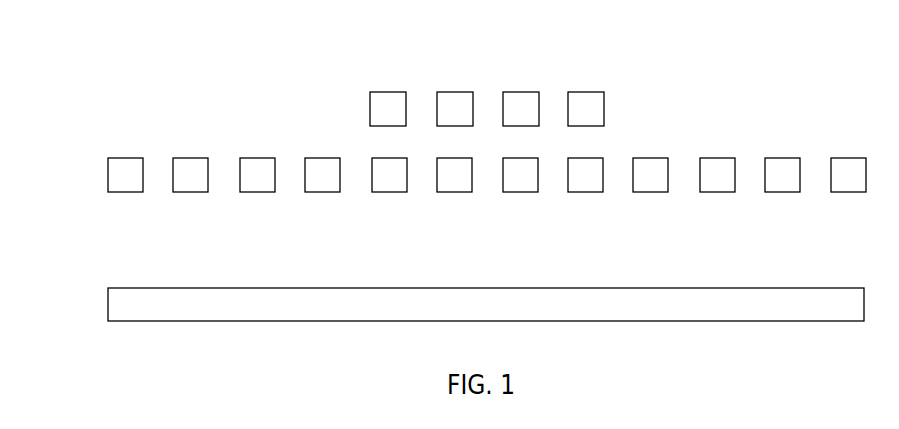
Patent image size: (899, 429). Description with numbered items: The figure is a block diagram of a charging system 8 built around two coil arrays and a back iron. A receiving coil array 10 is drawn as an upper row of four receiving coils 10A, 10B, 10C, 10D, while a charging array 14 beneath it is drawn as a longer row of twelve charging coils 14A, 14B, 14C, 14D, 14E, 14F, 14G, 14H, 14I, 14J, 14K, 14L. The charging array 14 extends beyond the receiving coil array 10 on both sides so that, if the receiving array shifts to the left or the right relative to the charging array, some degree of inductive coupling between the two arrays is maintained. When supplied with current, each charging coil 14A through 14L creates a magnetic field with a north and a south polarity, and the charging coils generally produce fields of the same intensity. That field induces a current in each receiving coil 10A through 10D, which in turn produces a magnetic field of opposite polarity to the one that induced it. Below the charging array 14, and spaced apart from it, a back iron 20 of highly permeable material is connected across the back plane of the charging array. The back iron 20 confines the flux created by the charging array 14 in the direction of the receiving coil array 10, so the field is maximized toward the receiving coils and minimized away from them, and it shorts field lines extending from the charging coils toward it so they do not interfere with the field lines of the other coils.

The charging system 8 is at (172, 84).
The receiving coil array 10 is at (316, 110).
The receiving coil 10A is at (397, 92).
The receiving coil 10B is at (463, 92).
The receiving coil 10C is at (529, 92).
The receiving coil 10D is at (594, 92).
The charging array 14 is at (88, 176).
The charging coil 14A is at (125, 196).
The charging coil 14B is at (183, 193).
The charging coil 14C is at (250, 193).
The charging coil 14D is at (315, 193).
The charging coil 14E is at (382, 193).
The charging coil 14F is at (447, 193).
The charging coil 14G is at (513, 193).
The charging coil 14H is at (578, 193).
The charging coil 14I is at (643, 193).
The charging coil 14J is at (710, 193).
The charging coil 14K is at (775, 193).
The charging coil 14L is at (841, 193).
The back iron 20 is at (766, 322).